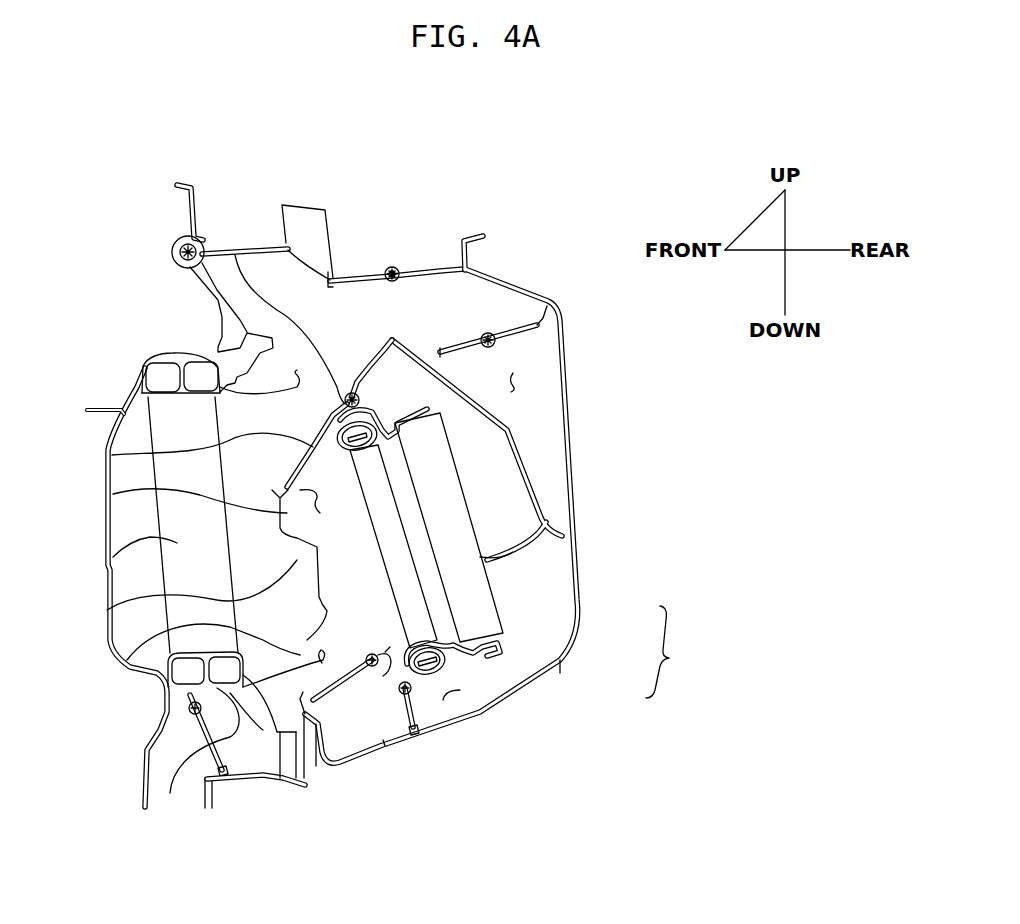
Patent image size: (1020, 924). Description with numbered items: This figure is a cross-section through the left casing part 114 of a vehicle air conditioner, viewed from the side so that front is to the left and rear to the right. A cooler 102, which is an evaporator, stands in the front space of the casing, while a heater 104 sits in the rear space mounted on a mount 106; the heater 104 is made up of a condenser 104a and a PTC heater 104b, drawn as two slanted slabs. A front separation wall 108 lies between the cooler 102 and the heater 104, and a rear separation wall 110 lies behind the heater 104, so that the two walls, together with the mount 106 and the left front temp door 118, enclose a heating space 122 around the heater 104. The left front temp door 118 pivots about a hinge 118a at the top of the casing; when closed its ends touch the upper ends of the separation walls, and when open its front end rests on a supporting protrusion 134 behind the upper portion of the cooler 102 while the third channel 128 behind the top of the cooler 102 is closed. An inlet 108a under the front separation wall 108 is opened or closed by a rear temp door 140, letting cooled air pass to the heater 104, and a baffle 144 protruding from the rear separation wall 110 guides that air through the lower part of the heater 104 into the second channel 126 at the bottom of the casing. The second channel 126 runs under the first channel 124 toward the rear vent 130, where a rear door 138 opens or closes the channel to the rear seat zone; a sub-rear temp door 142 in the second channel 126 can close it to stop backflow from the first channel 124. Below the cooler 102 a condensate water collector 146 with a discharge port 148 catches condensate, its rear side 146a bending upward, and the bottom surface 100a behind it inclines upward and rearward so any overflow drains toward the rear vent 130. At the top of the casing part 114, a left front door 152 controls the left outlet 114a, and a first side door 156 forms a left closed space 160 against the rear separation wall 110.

The bottom surface 100a is at (385, 746).
The cooler 102 is at (113, 557).
The heater 104 is at (675, 652).
The condenser 104a is at (560, 673).
The PTC heater 104b is at (480, 607).
The mount 106 is at (410, 407).
The front separation wall 108 is at (140, 598).
The inlet 108a is at (163, 628).
The rear separation wall 110 is at (513, 430).
The left casing part 114 is at (575, 490).
The left outlet 114a is at (357, 277).
The left front temp door 118 is at (147, 452).
The hinge 118a is at (237, 247).
The heating space 122 is at (113, 493).
The first channel 124 is at (163, 670).
The second channel 126 is at (443, 700).
The third channel 128 is at (147, 373).
The rear vent 130 is at (145, 748).
The supporting protrusion 134 is at (220, 387).
The rear door 138 is at (143, 789).
The rear temp door 140 is at (350, 683).
The sub-rear temp door 142 is at (420, 718).
The baffle 144 is at (513, 552).
The condensate water collector 146 is at (225, 750).
The rear side 146a is at (297, 753).
The discharge port 148 is at (287, 781).
The left front door 152 is at (413, 270).
The first side door 156 is at (513, 327).
The left closed space 160 is at (513, 373).